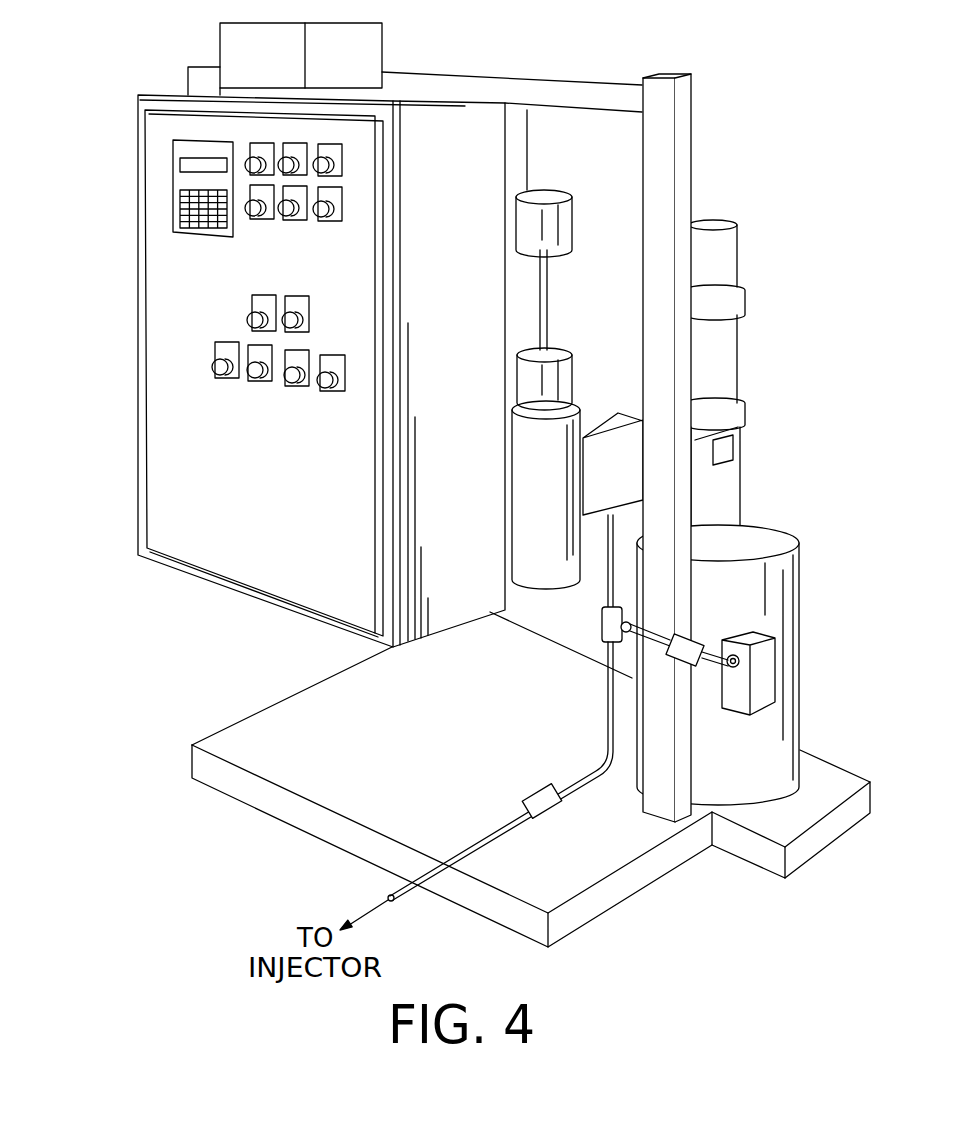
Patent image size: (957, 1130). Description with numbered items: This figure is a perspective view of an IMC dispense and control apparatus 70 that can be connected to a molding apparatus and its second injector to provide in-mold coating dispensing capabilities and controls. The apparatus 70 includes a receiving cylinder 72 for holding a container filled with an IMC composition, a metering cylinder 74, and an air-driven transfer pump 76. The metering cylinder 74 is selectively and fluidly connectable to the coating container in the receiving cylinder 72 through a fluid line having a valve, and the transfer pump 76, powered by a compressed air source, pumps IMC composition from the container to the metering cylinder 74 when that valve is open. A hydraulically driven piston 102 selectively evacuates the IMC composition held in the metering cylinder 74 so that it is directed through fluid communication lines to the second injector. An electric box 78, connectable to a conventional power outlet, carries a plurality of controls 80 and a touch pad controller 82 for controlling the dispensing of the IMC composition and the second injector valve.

The IMC dispense and control apparatus 70 is at (135, 620).
The receiving cylinder 72 is at (785, 598).
The metering cylinder 74 is at (555, 567).
The air-driven transfer pump 76 is at (727, 255).
The electric box 78 is at (175, 435).
The controls 80 is at (175, 304).
The touch pad controller 82 is at (168, 215).
The hydraulically driven piston 102 is at (563, 225).